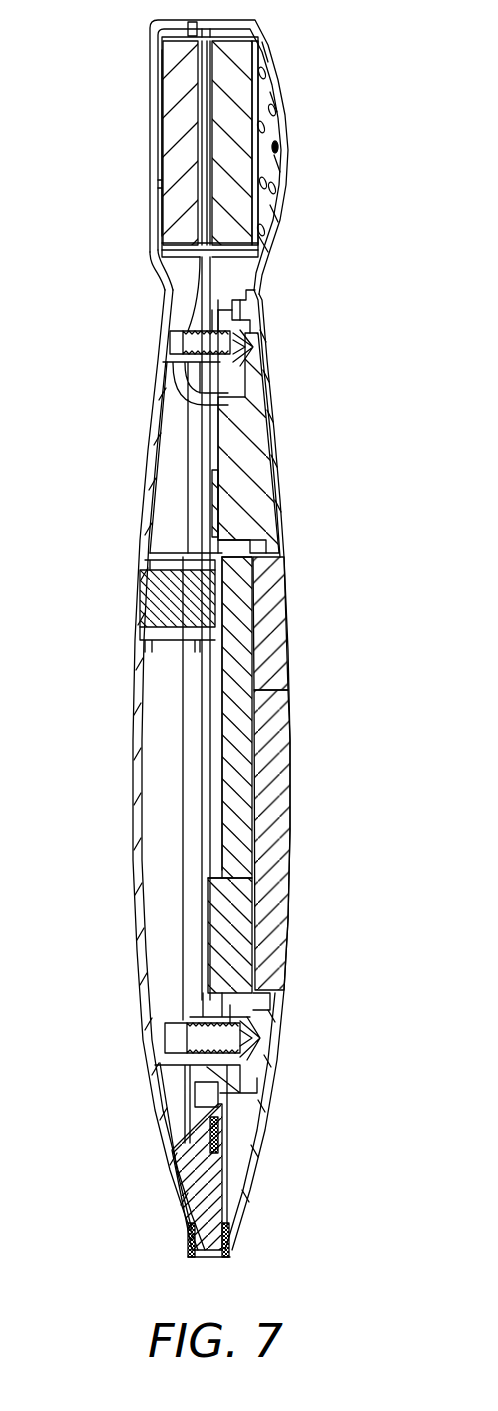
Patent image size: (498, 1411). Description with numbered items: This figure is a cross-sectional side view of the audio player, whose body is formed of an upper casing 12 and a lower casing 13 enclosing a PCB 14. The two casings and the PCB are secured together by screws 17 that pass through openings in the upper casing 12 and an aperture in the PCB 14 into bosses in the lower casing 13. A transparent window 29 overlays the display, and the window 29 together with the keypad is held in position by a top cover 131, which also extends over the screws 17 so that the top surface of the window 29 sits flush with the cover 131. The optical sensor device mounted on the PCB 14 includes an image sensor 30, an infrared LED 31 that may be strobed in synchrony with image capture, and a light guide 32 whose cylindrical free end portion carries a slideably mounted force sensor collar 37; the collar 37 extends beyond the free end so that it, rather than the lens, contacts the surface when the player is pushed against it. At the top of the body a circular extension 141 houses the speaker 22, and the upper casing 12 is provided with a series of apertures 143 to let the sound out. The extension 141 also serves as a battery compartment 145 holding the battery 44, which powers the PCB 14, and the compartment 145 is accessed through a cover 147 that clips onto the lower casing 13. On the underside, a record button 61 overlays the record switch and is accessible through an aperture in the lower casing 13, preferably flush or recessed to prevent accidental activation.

The upper casing 12 is at (259, 294).
The lower casing 13 is at (160, 275).
The PCB 14 is at (196, 1102).
The screws 17 is at (165, 343).
The speaker 22 is at (243, 222).
The transparent window 29 is at (283, 592).
The image sensor 30 is at (228, 1103).
The infrared LED 31 is at (222, 1137).
The light guide 32 is at (190, 1168).
The force sensor collar 37 is at (233, 1247).
The battery 44 is at (155, 181).
The record button 61 is at (155, 603).
The top cover 131 is at (268, 516).
The circular extension 141 is at (264, 30).
The apertures 143 is at (283, 147).
The battery compartment 145 is at (156, 68).
The cover 147 is at (155, 133).